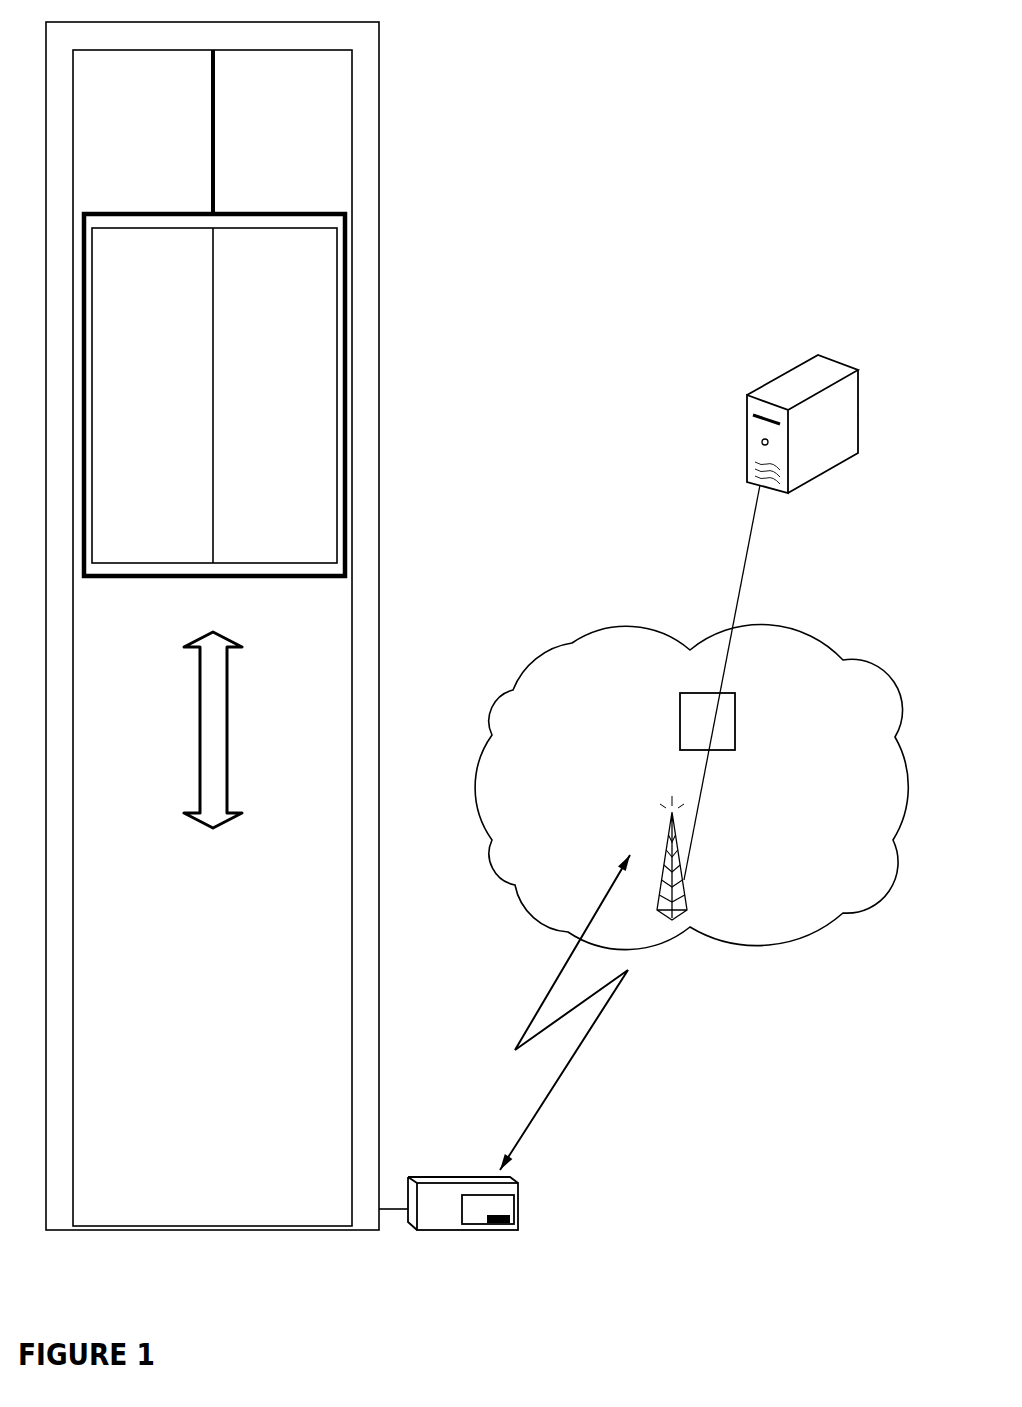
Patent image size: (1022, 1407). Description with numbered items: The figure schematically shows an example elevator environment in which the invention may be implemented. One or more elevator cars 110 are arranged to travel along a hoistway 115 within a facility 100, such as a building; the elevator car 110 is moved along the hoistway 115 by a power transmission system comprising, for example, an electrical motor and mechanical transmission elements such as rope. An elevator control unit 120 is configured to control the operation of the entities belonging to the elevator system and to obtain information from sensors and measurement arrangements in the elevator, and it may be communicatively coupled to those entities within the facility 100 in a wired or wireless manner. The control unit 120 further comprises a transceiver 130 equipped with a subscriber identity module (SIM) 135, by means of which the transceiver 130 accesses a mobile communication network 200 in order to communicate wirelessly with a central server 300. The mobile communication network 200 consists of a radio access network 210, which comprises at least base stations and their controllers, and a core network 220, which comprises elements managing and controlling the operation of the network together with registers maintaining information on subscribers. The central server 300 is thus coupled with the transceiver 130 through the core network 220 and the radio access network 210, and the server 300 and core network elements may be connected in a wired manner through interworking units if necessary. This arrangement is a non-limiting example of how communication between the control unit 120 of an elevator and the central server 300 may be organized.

The facility 100 is at (436, 56).
The elevator car 110 is at (272, 212).
The hoistway 115 is at (380, 170).
The control unit 120 is at (520, 1216).
The transceiver 130 is at (467, 1226).
The subscriber identity module (SIM) 135 is at (500, 1226).
The mobile communication network 200 is at (590, 642).
The radio access network (RAN) 210 is at (688, 893).
The core network 220 is at (740, 712).
The central server 300 is at (826, 355).